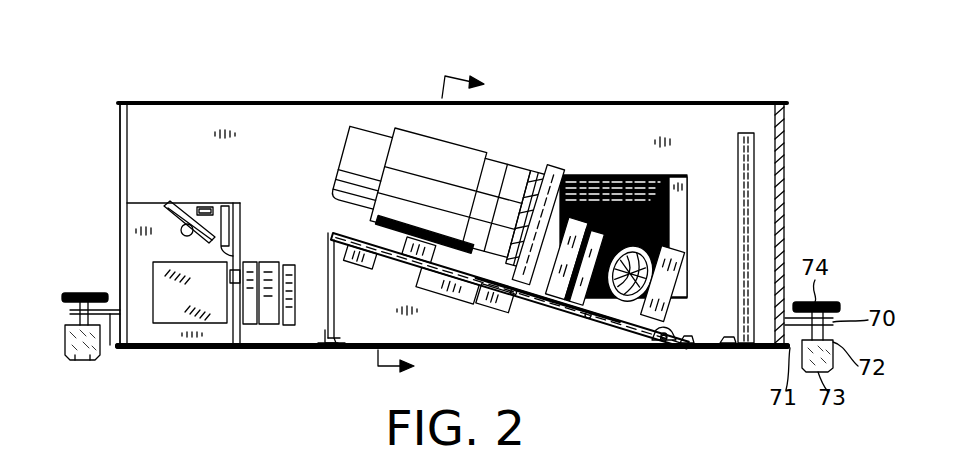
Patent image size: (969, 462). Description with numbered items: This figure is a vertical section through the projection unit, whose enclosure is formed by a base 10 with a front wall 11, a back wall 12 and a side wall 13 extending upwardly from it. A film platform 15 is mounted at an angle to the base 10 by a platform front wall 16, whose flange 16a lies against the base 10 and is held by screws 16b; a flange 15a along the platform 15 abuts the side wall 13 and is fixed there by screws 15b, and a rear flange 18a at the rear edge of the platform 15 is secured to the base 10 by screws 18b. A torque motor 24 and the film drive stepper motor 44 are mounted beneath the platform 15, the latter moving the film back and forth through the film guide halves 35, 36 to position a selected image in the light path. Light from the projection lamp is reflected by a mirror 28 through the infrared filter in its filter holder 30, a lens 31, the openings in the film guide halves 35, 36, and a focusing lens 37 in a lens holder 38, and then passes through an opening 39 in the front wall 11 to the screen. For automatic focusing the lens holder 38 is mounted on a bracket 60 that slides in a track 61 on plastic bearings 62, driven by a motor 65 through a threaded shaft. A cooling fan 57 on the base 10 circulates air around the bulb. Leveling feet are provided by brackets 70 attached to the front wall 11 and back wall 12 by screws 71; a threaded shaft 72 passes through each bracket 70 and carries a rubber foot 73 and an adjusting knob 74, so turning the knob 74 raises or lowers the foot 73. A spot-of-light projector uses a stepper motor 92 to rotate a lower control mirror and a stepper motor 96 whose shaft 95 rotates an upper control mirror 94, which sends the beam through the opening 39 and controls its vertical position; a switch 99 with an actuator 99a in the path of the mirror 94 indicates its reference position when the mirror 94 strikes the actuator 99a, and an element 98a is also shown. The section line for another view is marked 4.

The section line 4- 4 is at (432, 227).
The base 10 is at (740, 350).
The front wall 11 is at (118, 276).
The back wall 12 is at (785, 168).
The side wall 13 is at (495, 118).
The film platform 15 is at (608, 338).
The flange 15a is at (515, 315).
The screws 15b is at (576, 328).
The platform front wall 16 is at (332, 343).
The flange 16a is at (322, 343).
The screws 16b is at (292, 345).
The rear flange 18a is at (689, 348).
The screws 18b is at (705, 336).
The torque motor 24 is at (470, 292).
The mirror 28 is at (650, 343).
The filter holder 30 is at (648, 176).
The lens 31 is at (617, 175).
The film guide half 35 is at (590, 177).
The film guide half 36 is at (546, 158).
The lens 37 is at (367, 130).
The lens holder 38 is at (418, 128).
The opening 39 is at (120, 143).
The film drive stepper motor 44 is at (510, 310).
The cooling fan 57 is at (677, 178).
The bracket 60 is at (412, 270).
The track 61 is at (350, 232).
The plastic bearings 62 is at (386, 264).
The motor 65 is at (328, 292).
The bracket 70 is at (112, 345).
The screws 71 is at (110, 345).
The threaded shaft 72 is at (65, 328).
The rubber foot 73 is at (75, 360).
The adjusting knob 74 is at (75, 293).
The stepper motor 92 is at (270, 262).
The upper control mirror 94 is at (170, 206).
The shaft 95 is at (187, 226).
The stepper motor 96 is at (262, 264).
The bracket 98a is at (229, 208).
The switch 99 is at (214, 210).
The actuator 99a is at (203, 207).